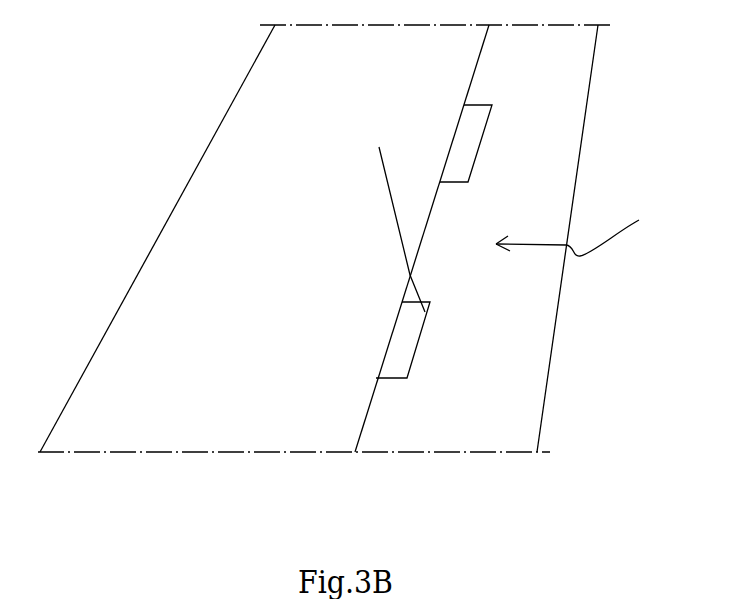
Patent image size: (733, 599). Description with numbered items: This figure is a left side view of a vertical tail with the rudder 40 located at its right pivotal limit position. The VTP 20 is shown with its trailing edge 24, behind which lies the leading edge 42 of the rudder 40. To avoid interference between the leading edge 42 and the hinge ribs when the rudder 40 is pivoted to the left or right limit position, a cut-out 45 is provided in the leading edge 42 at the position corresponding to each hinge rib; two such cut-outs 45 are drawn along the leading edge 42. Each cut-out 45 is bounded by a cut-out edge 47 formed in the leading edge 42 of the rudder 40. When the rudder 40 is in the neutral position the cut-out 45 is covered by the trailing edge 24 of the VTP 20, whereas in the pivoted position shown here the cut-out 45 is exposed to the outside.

The VTP 20 is at (238, 210).
The trailing edge 24 is at (304, 258).
The leading edge 42 is at (535, 215).
The cut-out 45 is at (466, 142).
The cut-out edge 47 is at (473, 167).
The rudder 40 is at (592, 230).